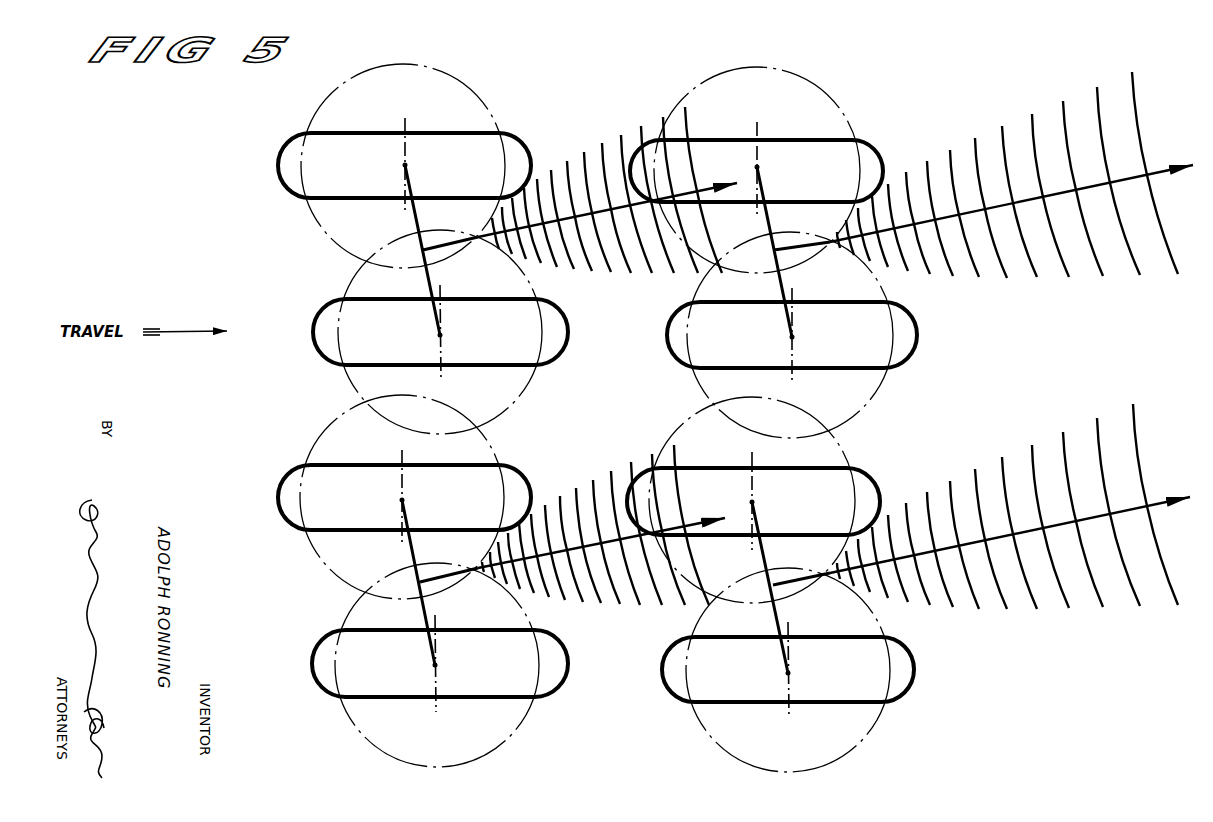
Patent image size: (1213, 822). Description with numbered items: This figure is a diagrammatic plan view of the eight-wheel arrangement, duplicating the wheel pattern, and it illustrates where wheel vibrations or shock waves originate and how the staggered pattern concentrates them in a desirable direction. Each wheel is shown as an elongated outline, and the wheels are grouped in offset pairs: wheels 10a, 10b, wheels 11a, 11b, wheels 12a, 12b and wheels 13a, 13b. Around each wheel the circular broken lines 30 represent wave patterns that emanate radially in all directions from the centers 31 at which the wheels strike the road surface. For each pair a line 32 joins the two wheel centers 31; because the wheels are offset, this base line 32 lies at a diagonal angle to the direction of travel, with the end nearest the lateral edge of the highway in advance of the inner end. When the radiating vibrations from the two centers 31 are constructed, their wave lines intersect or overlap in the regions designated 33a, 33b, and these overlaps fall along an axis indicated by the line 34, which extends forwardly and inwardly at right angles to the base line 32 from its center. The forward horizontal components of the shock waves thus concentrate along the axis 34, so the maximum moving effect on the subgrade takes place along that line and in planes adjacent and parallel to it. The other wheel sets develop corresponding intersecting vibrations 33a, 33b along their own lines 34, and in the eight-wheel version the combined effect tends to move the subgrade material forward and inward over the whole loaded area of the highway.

The wheel 10a is at (788, 669).
The wheel 10b is at (753, 501).
The wheel 11a is at (792, 335).
The wheel 11b is at (756, 171).
The wheel 12a is at (440, 663).
The wheel 12b is at (404, 497).
The wheel 13a is at (440, 332).
The wheel 13b is at (404, 165).
The circular broken lines 30 is at (352, 280).
The wheel center 31 is at (403, 165).
The base line 32 is at (433, 288).
The intersecting wave lines 33a is at (610, 265).
The intersecting wave lines 33b is at (596, 176).
The axis line 34 is at (716, 189).